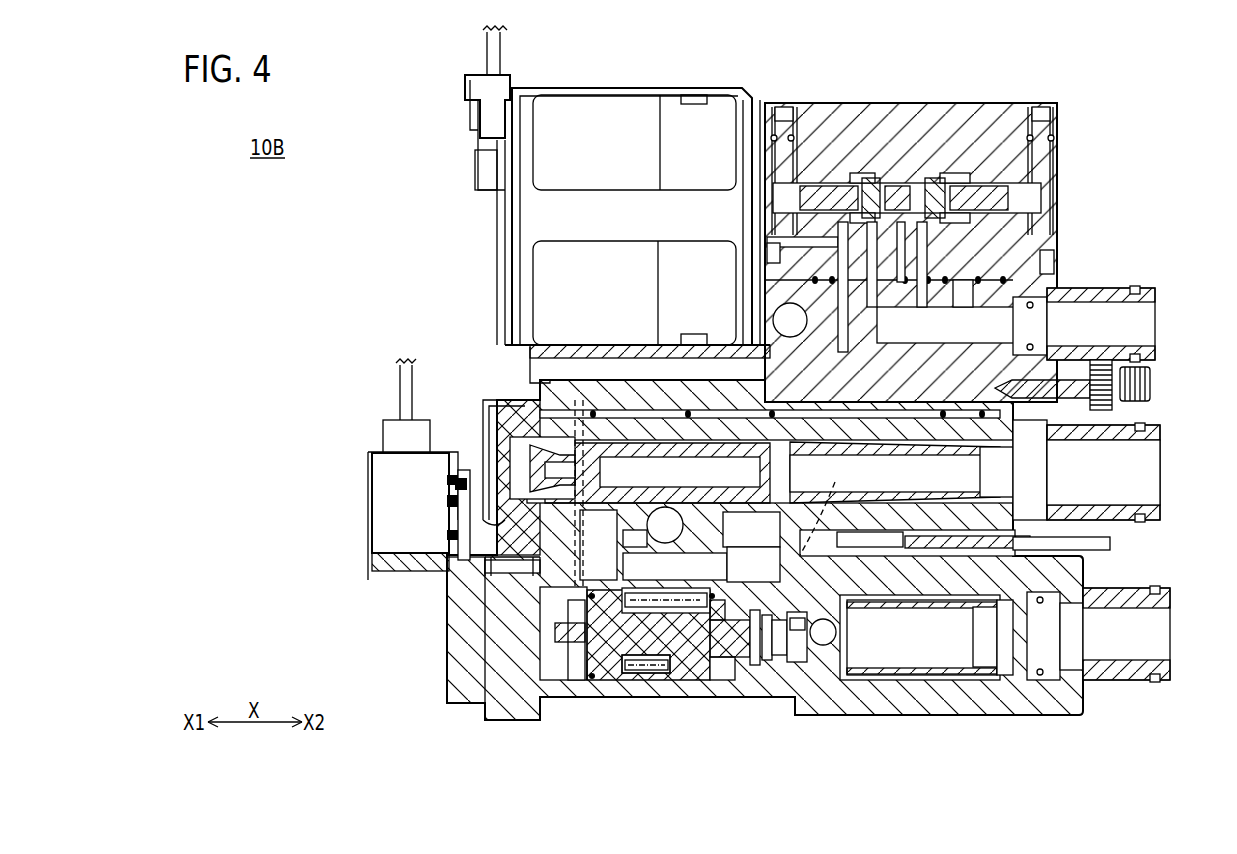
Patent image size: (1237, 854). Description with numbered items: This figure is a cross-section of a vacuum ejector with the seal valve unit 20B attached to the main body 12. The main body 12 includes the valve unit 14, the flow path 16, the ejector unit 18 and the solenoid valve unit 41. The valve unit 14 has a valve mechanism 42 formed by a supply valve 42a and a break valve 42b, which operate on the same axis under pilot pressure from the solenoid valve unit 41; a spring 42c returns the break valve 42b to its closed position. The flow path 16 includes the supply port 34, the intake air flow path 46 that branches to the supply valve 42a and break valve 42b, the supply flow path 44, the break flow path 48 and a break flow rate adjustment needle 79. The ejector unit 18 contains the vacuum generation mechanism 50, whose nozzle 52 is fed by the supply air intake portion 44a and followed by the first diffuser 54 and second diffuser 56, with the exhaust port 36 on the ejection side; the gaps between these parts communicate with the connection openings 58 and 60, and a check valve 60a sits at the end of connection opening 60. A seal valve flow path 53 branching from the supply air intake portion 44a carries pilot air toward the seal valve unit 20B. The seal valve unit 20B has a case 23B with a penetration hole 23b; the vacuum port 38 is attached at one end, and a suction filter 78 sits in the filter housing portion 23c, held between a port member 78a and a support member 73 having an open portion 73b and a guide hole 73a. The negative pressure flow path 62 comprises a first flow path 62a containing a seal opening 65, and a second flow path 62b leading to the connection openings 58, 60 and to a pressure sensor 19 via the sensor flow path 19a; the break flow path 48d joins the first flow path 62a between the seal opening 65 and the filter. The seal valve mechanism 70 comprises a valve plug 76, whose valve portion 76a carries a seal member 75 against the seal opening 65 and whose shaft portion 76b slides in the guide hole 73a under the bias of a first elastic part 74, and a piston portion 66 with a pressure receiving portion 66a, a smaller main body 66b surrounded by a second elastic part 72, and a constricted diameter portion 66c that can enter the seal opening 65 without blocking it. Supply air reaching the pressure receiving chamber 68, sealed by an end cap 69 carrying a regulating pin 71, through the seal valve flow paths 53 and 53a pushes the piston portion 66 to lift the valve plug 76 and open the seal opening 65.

The solenoid valve unit 41 is at (578, 88).
The valve mechanism 42 is at (912, 167).
The supply valve 42a is at (845, 185).
The break valve 42b is at (990, 190).
The spring 42c is at (946, 182).
The supply flow path 44 is at (858, 205).
The intake air flow path 46 is at (895, 200).
The main body 12 is at (1062, 112).
The valve unit 14 is at (1052, 163).
The break flow path 48 is at (1060, 216).
The flow path 16 is at (1055, 256).
The supply port 34 is at (1119, 288).
The break flow rate adjustment needle 79 is at (1151, 386).
The exhaust port 36 is at (1160, 425).
The ejector unit 18 is at (1162, 470).
The vacuum port 38 is at (1164, 590).
The seal valve unit 20B is at (1090, 699).
The break flow path 48d is at (824, 506).
The second diffuser 56 is at (855, 497).
The seal valve flow path 53 is at (578, 418).
The supply air intake portion 44a is at (513, 428).
The nozzle 52 is at (545, 465).
The vacuum generation mechanism 50 is at (514, 483).
The pressure sensor 19 is at (392, 510).
The sensor flow path 19a is at (470, 540).
The first diffuser 54 is at (682, 479).
The second flow path 62b is at (690, 565).
The check valve 60a is at (781, 546).
The connection opening 60 is at (776, 540).
The valve portion 76a is at (732, 608).
The shaft portion 76b is at (792, 616).
The connection opening 58 is at (606, 533).
The seal valve flow path 53a is at (520, 573).
The regulating pin 71 is at (556, 632).
The end cap 69 is at (540, 660).
The valve plug 76 is at (836, 632).
The open portion 73b is at (855, 622).
The guide hole 73a is at (855, 645).
The port member 78a is at (981, 648).
The pressure receiving chamber 68 is at (572, 680).
The pressure receiving portion 66a is at (590, 668).
The seal valve mechanism 70 is at (606, 682).
The main body 66b is at (640, 657).
The second elastic part 72 is at (655, 670).
The piston portion 66 is at (692, 660).
The sleeve 62 is at (712, 650).
The seal opening 65 is at (755, 665).
The constricted diameter portion 66c is at (732, 690).
The seal member 75 is at (766, 662).
The first elastic part 74 is at (781, 656).
The first flow path 62a is at (797, 662).
The support member 73 is at (825, 660).
The filter housing portion 23c is at (910, 680).
The suction filter 78 is at (960, 678).
The penetration hole 23b is at (1012, 683).
The case 23B is at (1050, 705).